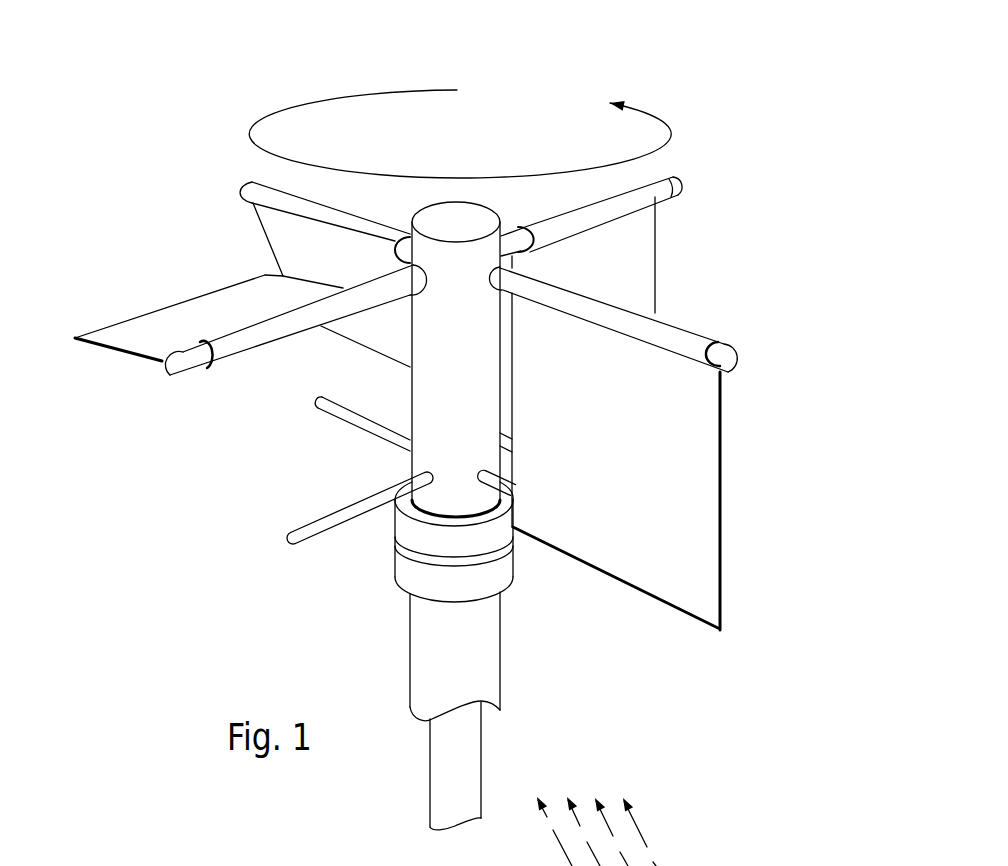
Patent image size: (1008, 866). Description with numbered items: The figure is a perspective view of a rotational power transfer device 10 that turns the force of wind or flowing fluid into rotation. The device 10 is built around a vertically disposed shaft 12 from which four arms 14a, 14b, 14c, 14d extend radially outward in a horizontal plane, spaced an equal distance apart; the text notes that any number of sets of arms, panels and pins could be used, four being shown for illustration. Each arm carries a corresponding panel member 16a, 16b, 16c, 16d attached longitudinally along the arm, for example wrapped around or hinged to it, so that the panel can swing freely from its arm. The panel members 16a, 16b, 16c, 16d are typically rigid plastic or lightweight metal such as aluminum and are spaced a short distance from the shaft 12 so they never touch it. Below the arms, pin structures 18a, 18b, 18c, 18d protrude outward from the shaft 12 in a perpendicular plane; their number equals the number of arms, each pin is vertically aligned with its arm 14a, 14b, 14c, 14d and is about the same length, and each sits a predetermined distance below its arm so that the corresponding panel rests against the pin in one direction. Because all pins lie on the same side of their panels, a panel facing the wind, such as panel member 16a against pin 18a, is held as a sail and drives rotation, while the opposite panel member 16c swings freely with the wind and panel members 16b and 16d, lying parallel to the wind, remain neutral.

The rotational power transfer device 10 is at (800, 143).
The shaft 12 is at (435, 222).
The arm 14a is at (737, 362).
The arm 14b is at (683, 182).
The arm 14c is at (235, 178).
The arm 14d is at (175, 376).
The panel member 16a is at (700, 472).
The panel member 16b is at (643, 268).
The panel member 16c is at (287, 233).
The panel member 16d is at (152, 333).
The pin structure 18a is at (495, 482).
The pin structure 18b is at (513, 453).
The pin structure 18c is at (314, 404).
The pin structure 18d is at (300, 540).